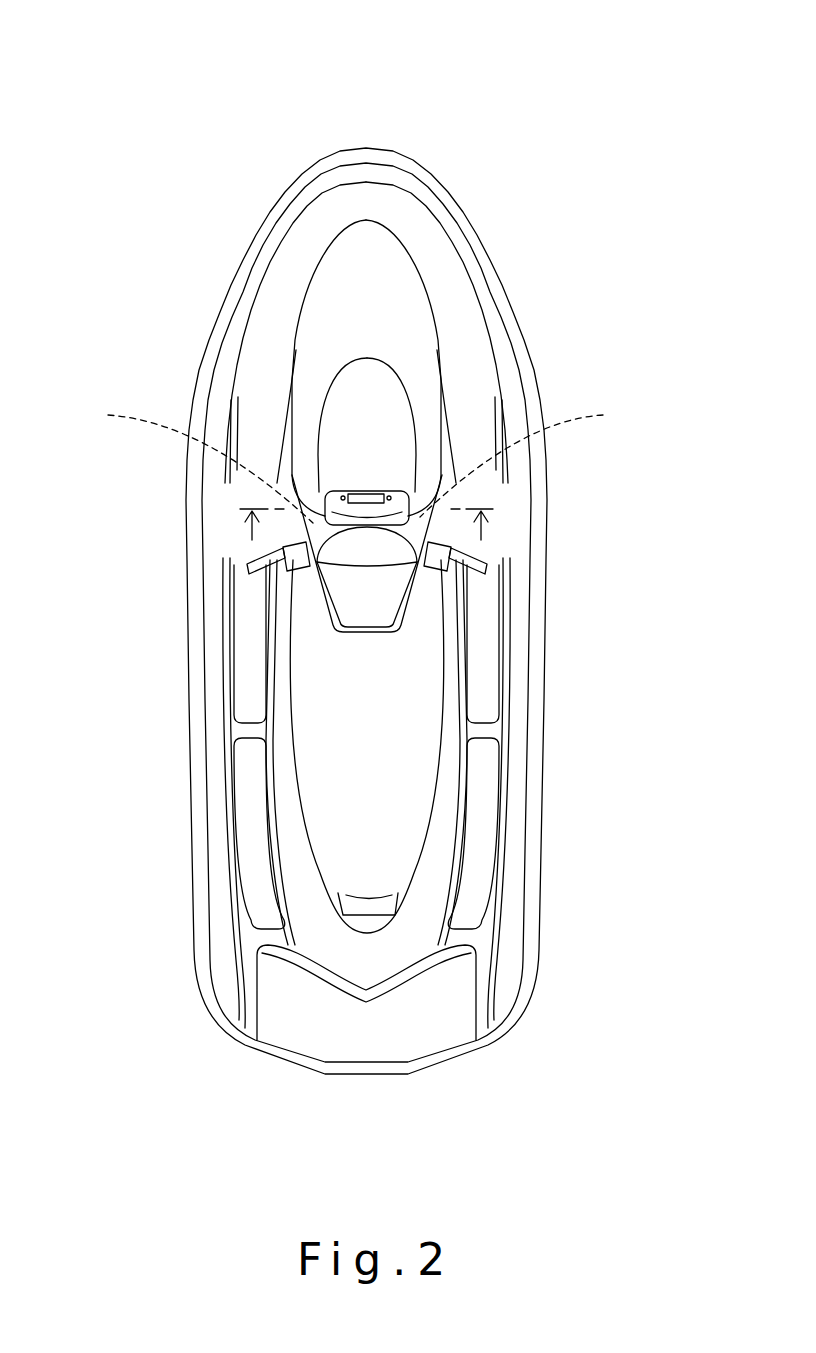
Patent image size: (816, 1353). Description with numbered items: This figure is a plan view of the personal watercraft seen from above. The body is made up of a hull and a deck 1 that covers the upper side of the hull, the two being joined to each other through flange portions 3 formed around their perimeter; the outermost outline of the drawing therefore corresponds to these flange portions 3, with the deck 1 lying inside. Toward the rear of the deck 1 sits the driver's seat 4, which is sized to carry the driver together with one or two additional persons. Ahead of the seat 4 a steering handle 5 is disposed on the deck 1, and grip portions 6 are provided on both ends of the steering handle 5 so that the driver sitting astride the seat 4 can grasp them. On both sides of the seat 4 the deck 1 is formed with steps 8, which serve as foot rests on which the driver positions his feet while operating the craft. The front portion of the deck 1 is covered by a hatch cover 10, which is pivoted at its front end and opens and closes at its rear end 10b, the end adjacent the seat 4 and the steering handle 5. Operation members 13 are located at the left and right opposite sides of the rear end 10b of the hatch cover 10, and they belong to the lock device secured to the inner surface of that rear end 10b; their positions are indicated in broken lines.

The deck 1 is at (443, 270).
The flange portions 3 is at (382, 148).
The driver's seat 4 is at (395, 823).
The steering handle 5 is at (353, 557).
The grip portions 6 is at (247, 569).
The steps (foot rests) 8 is at (250, 685).
The hatch cover 10 is at (320, 368).
The rear end of the hatch cover 10b is at (413, 527).
The operation members 13 is at (367, 473).